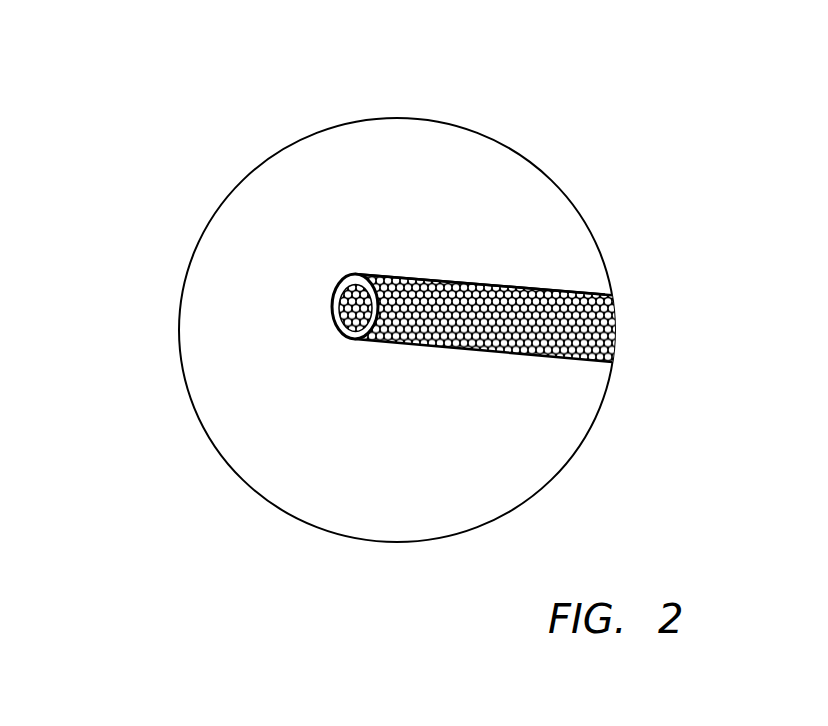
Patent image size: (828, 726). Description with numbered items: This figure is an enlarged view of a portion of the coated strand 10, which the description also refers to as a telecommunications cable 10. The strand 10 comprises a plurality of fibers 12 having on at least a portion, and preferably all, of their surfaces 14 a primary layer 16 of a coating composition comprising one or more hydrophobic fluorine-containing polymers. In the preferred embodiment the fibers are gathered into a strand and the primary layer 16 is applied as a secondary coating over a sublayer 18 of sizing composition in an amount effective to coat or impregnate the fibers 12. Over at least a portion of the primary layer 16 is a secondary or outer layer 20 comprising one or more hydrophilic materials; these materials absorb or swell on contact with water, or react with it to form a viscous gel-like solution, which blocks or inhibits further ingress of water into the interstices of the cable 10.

The strand 10 is at (578, 294).
The fibers 12 is at (335, 326).
The surfaces 14 is at (357, 340).
The primary layer 16 is at (357, 276).
The sublayer 18 is at (333, 303).
The secondary or outer layer 20 is at (467, 283).